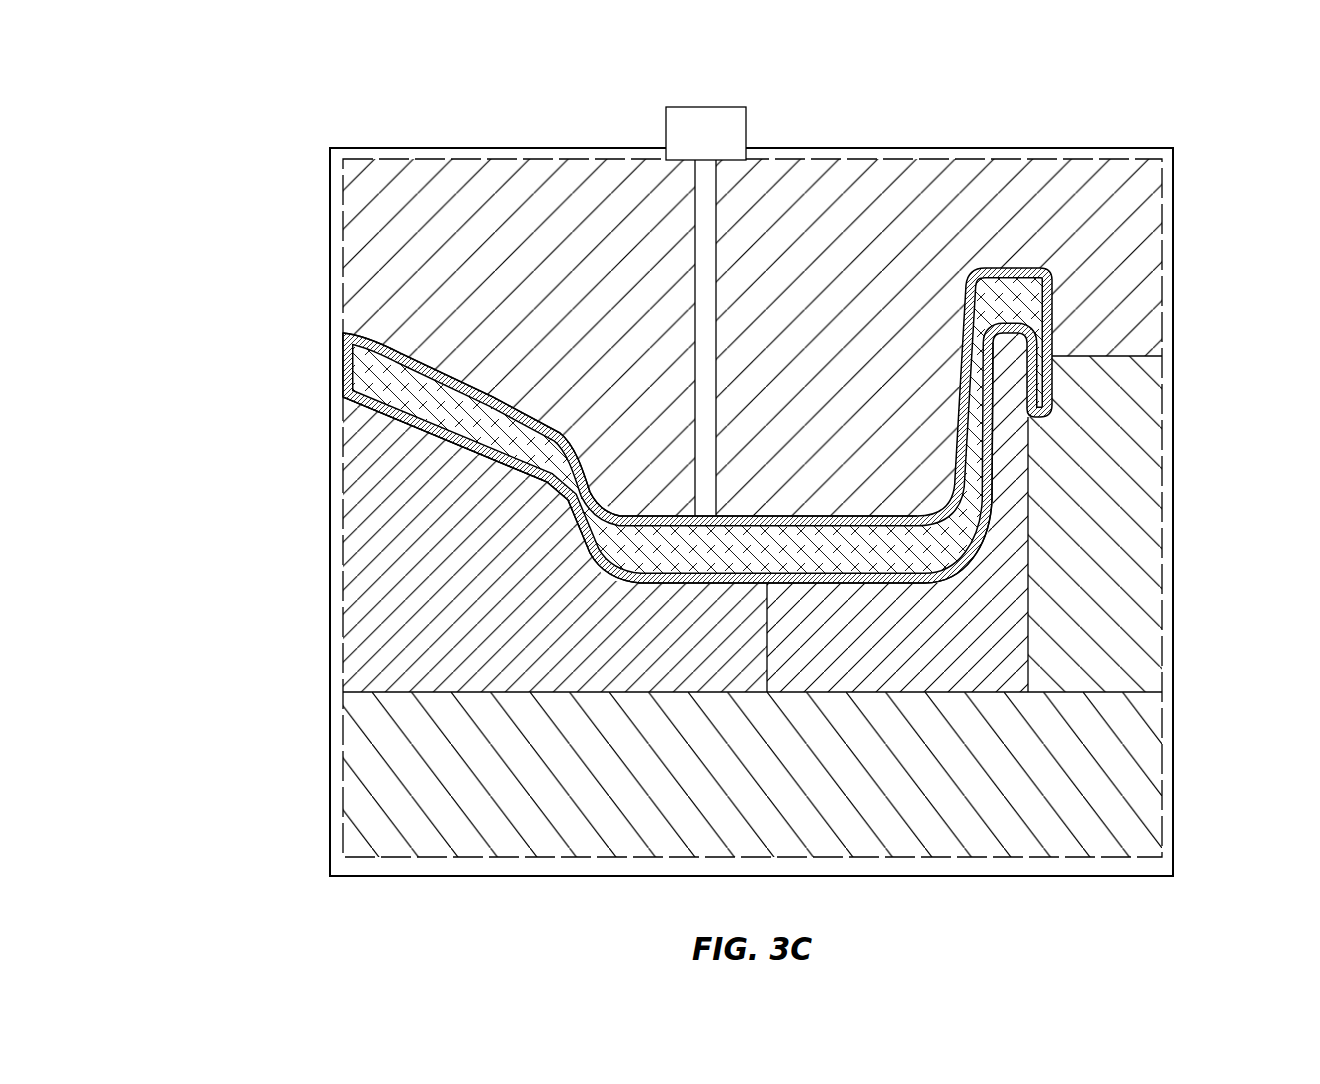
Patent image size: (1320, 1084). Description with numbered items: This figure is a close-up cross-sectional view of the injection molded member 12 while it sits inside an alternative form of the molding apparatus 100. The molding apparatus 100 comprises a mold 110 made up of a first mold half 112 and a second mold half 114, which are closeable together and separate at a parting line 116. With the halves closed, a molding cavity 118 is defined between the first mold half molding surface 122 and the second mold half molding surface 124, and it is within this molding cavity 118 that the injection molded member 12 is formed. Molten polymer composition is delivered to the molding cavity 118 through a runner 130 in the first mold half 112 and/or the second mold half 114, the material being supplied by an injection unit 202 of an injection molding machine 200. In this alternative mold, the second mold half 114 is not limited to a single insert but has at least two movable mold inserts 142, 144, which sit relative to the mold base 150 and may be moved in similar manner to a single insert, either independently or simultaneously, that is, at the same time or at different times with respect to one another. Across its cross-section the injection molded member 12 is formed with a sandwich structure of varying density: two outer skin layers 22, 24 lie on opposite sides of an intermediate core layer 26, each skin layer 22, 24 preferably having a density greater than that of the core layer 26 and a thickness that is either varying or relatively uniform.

The molding apparatus 100 is at (213, 88).
The mold 110 is at (757, 492).
The first mold half 112 is at (320, 248).
The second mold half 114 is at (727, 522).
The parting line 116 is at (1180, 350).
The molding cavity 118 is at (325, 372).
The first mold half molding surface 122 is at (343, 327).
The second mold half molding surface 124 is at (343, 398).
The injection molded member 12 is at (612, 449).
The outer (skin) layer 22 is at (697, 425).
The outer (skin) layer 24 is at (697, 425).
The intermediate (core) layer 26 is at (836, 562).
The runner 130 is at (700, 198).
The movable mold insert 142 is at (363, 633).
The movable mold insert 144 is at (1003, 650).
The mold base 150 is at (1160, 783).
The injection molding machine 200 is at (771, 115).
The injection unit 202 is at (752, 102).